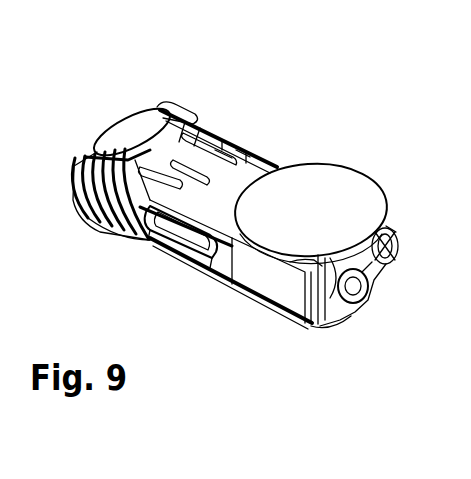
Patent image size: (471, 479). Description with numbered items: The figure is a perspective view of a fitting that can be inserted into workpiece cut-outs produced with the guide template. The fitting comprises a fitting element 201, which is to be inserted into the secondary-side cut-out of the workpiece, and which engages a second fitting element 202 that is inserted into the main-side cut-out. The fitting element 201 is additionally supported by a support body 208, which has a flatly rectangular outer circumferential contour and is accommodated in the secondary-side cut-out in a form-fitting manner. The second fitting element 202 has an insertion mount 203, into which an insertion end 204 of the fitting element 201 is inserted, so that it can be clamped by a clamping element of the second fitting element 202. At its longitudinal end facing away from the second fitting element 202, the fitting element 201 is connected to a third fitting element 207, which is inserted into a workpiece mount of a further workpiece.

The fitting element 201 is at (318, 326).
The second fitting element 202 is at (390, 228).
The insertion mount 203 is at (347, 308).
The insertion end 204 is at (364, 288).
The third fitting element 207 is at (190, 123).
The support body 208 is at (210, 277).